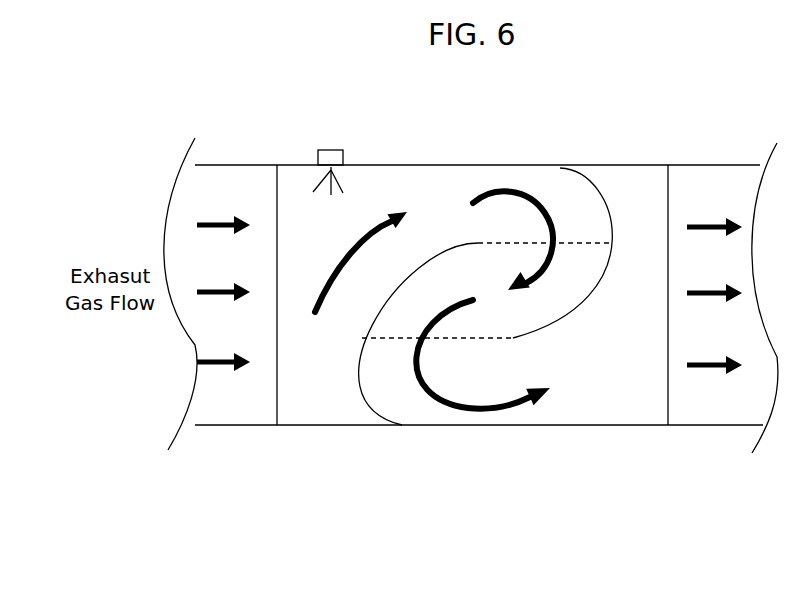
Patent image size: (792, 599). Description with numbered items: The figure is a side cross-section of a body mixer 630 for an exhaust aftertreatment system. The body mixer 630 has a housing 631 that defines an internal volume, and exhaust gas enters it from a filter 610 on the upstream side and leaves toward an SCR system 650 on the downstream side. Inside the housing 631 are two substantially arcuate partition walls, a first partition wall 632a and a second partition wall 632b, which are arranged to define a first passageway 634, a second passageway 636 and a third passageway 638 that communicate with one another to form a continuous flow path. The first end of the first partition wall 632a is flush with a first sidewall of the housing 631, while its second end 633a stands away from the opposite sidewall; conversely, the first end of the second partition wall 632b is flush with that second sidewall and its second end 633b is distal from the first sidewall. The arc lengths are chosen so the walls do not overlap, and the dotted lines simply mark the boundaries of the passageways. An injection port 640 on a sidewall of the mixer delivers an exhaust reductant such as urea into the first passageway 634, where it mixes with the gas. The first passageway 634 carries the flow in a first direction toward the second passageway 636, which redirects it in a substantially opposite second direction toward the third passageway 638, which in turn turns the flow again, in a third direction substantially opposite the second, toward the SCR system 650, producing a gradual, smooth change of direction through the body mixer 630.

The body mixer 630 is at (563, 88).
The filter 610 is at (228, 408).
The SCR system 650 is at (725, 412).
The housing 631 is at (553, 428).
The first passageway 634 is at (318, 380).
The third passageway 638 is at (622, 387).
The first partition wall 632a is at (383, 413).
The second partition wall 632b is at (617, 223).
The second passageway 636 is at (558, 278).
The first partition wall second end 633a is at (478, 243).
The second partition wall second end 633b is at (513, 340).
The injection port 640 is at (328, 150).